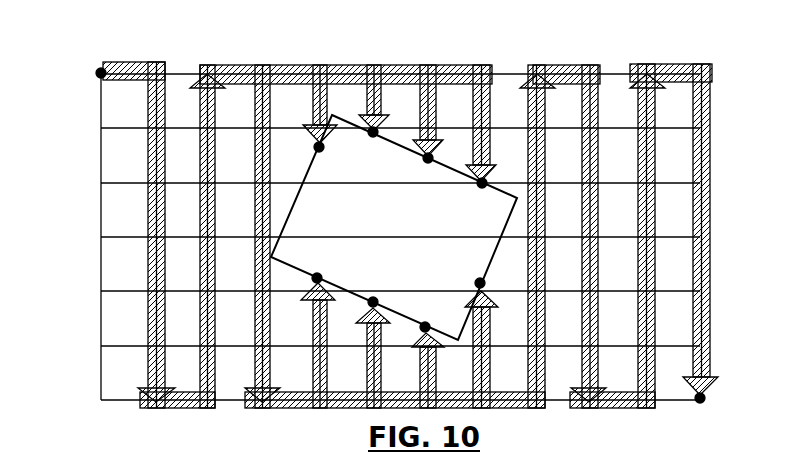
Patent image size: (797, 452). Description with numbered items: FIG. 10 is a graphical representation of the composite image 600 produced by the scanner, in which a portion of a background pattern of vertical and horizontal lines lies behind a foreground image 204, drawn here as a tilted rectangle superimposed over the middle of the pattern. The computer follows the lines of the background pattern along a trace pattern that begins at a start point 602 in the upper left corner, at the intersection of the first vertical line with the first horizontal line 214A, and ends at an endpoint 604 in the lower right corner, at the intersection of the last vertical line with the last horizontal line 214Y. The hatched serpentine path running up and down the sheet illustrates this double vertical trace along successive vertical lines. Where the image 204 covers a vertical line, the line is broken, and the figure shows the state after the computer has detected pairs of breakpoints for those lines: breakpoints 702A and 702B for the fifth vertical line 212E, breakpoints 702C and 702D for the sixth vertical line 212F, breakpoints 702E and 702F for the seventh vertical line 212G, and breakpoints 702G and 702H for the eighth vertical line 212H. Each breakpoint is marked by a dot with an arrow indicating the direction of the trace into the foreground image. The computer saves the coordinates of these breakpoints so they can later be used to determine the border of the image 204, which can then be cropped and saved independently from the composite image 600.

The composite image 600 is at (78, 38).
The start point 602 is at (98, 76).
The endpoint 604 is at (703, 401).
The first horizontal line 214A is at (183, 73).
The last horizontal line 214Y is at (118, 401).
The fifth vertical line 212E is at (300, 68).
The sixth vertical line 212F is at (364, 85).
The seventh vertical line 212G is at (407, 65).
The eighth vertical line 212H is at (500, 73).
The image 204 is at (457, 172).
The breakpoint 702A is at (317, 278).
The breakpoint 702B is at (319, 147).
The breakpoint 702C is at (373, 302).
The breakpoint 702D is at (373, 132).
The breakpoint 702E is at (425, 327).
The breakpoint 702F is at (428, 158).
The breakpoint 702G is at (482, 281).
The breakpoint 702H is at (486, 178).